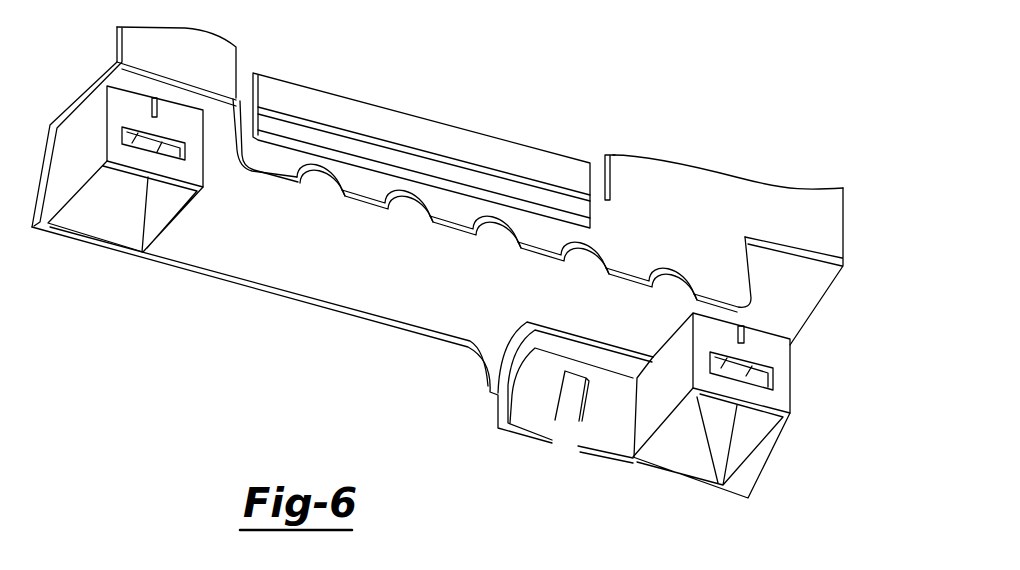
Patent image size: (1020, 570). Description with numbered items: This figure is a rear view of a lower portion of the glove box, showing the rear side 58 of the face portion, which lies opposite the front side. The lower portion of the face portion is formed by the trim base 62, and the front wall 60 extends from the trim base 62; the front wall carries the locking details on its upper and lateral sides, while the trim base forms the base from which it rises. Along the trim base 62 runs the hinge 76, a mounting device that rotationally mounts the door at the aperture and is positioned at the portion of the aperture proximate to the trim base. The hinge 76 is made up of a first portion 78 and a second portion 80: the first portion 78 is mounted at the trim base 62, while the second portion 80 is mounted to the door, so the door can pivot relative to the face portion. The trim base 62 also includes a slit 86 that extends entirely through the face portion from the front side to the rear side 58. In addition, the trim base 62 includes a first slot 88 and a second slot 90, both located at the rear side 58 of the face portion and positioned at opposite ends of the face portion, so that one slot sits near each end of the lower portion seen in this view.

The rear side 58 is at (747, 190).
The front wall 60 is at (618, 163).
The trim base 62 is at (310, 287).
The hinge 76 is at (421, 143).
The first portion 78 is at (270, 127).
The second portion 80 is at (463, 145).
The slit 86 is at (561, 425).
The first slot 88 is at (197, 172).
The second slot 90 is at (787, 384).